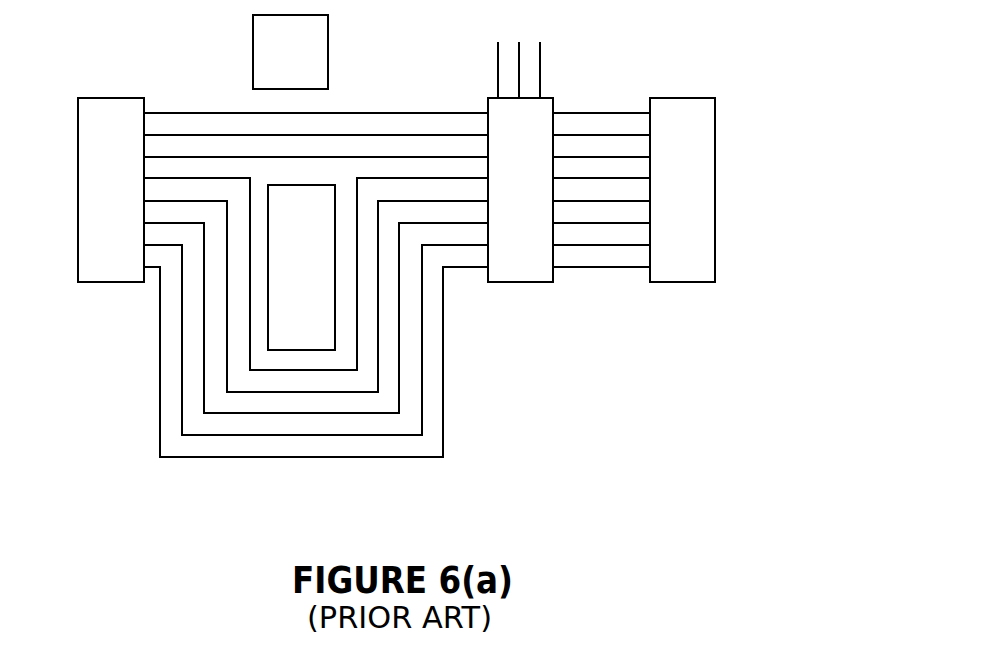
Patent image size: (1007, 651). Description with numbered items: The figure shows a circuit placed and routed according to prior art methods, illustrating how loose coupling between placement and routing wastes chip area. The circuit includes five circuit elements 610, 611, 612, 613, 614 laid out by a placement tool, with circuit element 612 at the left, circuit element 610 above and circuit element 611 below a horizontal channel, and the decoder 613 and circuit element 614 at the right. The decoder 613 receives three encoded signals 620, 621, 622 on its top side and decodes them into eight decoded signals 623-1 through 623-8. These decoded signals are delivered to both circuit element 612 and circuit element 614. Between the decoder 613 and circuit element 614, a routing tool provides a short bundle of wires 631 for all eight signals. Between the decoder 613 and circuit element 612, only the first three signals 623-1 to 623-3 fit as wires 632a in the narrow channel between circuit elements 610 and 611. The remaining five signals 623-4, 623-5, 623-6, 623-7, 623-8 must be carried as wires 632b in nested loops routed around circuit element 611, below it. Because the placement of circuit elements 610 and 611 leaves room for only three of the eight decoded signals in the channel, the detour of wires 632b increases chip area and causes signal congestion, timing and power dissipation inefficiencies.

The circuit element 610 is at (308, 68).
The circuit element 611 is at (318, 282).
The circuit element 612 is at (128, 204).
The decoder 613 is at (538, 205).
The circuit element 614 is at (700, 205).
The encoded signal 620 is at (540, 58).
The encoded signal 621 is at (520, 57).
The encoded signal 622 is at (498, 60).
The decoded signal 623-1 is at (361, 106).
The decoded signal 623-3 is at (397, 119).
The decoded signal 623-4 is at (289, 470).
The decoded signal 623-5 is at (397, 296).
The decoded signal 623-6 is at (397, 318).
The decoded signal 623-7 is at (397, 340).
The decoded signal 623-8 is at (603, 84).
The wires 631 is at (616, 292).
The wires 632a is at (214, 74).
The wires 632b is at (136, 322).